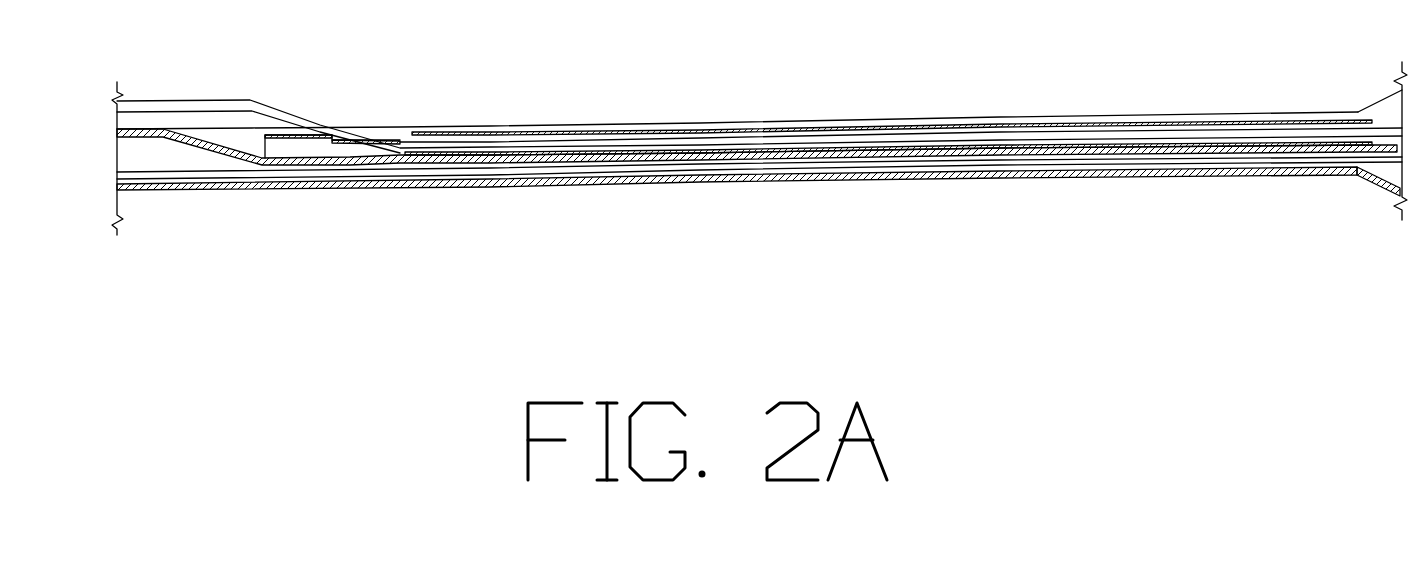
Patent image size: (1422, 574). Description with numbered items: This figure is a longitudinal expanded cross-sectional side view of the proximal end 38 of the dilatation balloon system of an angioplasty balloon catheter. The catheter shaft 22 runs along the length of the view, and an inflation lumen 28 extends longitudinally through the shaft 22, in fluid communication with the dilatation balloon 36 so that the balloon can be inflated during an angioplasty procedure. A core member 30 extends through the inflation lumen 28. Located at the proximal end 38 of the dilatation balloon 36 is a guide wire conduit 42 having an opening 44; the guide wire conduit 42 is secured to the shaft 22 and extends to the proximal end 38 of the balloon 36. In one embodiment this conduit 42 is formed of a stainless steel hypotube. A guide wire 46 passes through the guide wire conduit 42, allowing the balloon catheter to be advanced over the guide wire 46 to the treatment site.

The shaft 22 is at (720, 127).
The inflation lumen 28 is at (730, 178).
The core member 30 is at (737, 197).
The dilatation balloon 36 is at (1359, 91).
The proximal end 38 is at (759, 117).
The guide wire conduit 42 is at (737, 106).
The opening 44 is at (833, 123).
The guide wire 46 is at (759, 105).